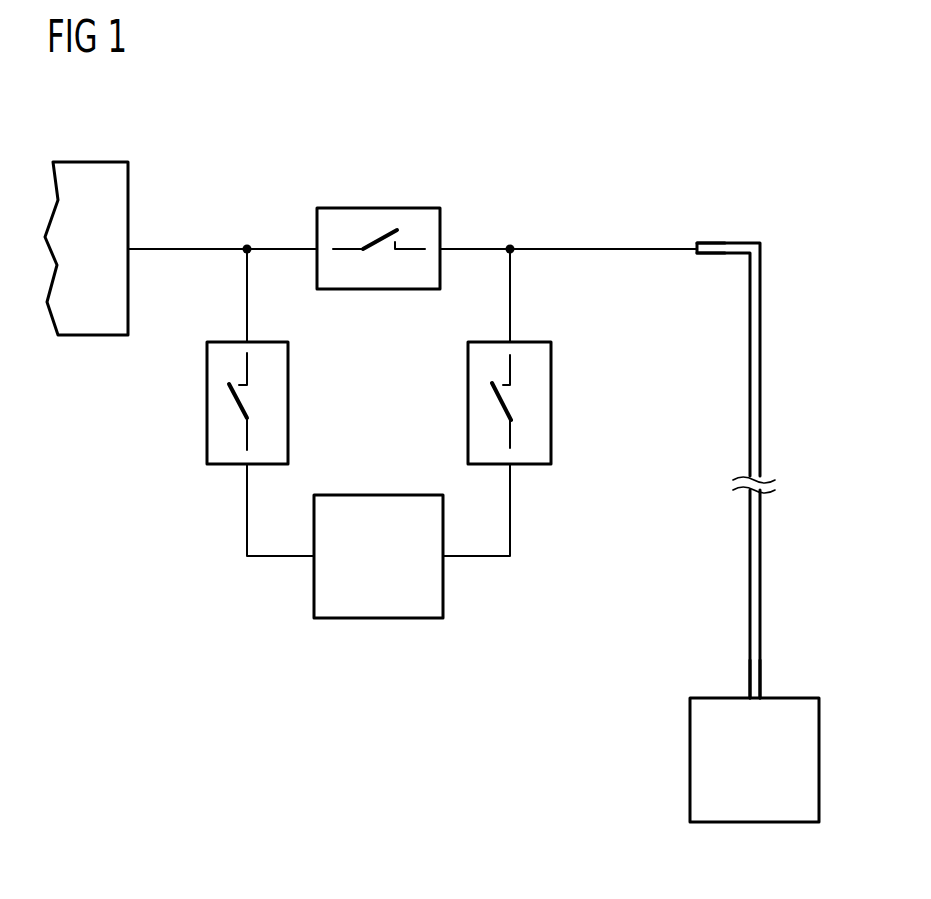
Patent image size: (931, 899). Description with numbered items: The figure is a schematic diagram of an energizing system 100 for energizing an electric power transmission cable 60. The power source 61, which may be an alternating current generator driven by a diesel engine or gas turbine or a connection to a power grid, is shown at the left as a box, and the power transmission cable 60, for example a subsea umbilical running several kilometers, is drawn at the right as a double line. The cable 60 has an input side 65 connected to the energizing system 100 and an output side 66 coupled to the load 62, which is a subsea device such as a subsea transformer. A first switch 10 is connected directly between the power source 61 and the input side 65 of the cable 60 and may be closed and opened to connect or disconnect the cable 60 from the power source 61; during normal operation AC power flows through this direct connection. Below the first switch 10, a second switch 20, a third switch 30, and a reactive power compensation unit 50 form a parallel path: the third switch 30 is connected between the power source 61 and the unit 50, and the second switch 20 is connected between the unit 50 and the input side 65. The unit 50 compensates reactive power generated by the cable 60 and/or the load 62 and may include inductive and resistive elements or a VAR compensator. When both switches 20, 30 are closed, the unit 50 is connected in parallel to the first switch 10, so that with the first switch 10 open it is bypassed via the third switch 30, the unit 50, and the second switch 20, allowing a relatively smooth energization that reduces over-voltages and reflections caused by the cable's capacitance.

The energizing system 100 is at (676, 123).
The first switch 10 is at (378, 208).
The second switch 20 is at (468, 397).
The third switch 30 is at (206, 397).
The reactive power compensation unit 50 is at (380, 495).
The power transmission cable 60 is at (731, 243).
The power source 61 is at (90, 162).
The load 62 is at (690, 758).
The input side 65 is at (703, 243).
The output side 66 is at (762, 683).